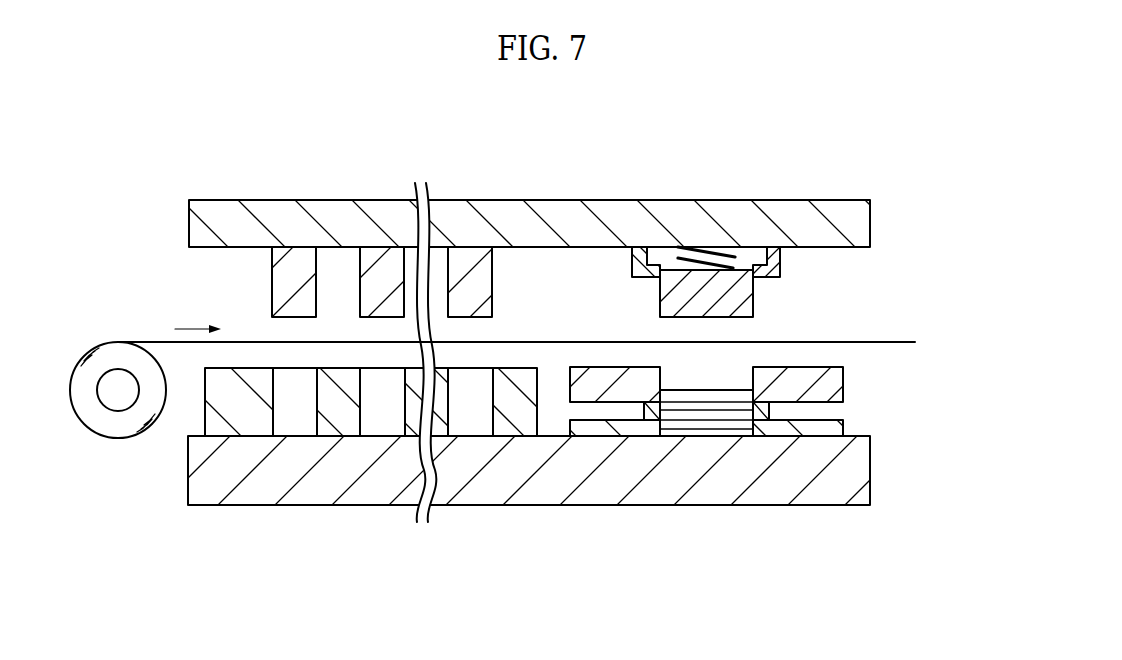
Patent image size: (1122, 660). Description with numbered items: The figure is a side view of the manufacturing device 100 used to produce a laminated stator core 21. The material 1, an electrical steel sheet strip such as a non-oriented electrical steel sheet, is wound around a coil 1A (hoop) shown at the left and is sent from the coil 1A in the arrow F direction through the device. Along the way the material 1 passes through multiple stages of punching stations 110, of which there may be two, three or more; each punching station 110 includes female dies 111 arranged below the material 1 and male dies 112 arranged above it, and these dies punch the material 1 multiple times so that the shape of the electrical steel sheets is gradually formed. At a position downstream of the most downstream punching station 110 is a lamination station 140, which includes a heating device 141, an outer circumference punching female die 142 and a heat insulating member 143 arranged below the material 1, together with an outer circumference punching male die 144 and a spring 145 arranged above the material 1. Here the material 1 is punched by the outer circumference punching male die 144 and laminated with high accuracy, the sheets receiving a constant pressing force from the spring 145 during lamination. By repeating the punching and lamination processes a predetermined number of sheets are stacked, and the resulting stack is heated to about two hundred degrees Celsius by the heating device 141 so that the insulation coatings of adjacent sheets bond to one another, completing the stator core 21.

The manufacturing device 100 is at (931, 239).
The material 1 is at (153, 340).
The coil 1A is at (88, 428).
The arrow F direction F is at (195, 327).
The punching station 110 is at (292, 236).
The female die 111 is at (280, 393).
The male die 112 is at (280, 276).
The lamination station 140 is at (679, 230).
The heating device 141 is at (770, 409).
The outer circumference punching female die 142 is at (843, 383).
The heat insulating member 143 is at (603, 430).
The outer circumference punching male die 144 is at (753, 293).
The spring 145 is at (720, 250).
The stator core 21 is at (700, 417).